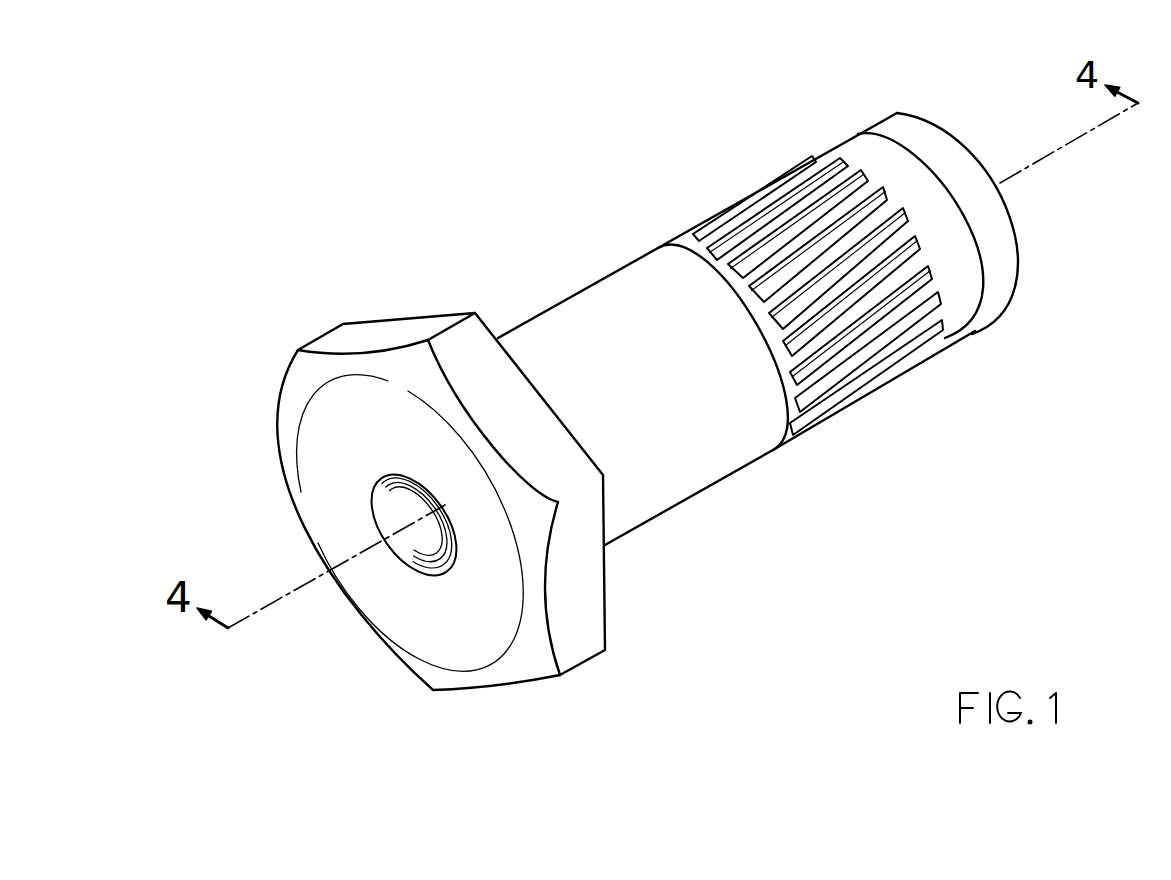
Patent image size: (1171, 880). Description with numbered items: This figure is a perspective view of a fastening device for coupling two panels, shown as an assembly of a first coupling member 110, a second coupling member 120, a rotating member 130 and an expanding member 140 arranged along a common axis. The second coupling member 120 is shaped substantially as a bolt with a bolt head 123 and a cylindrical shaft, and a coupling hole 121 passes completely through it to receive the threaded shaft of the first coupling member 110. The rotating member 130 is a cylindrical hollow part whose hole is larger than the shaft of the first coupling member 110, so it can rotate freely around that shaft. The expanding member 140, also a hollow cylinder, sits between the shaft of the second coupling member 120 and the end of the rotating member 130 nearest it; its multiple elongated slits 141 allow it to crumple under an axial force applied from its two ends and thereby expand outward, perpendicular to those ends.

The first coupling member 110 is at (1007, 268).
The second coupling member 120 is at (685, 433).
The coupling hole 121 is at (392, 517).
The bolt head 123 is at (465, 648).
The rotating member 130 is at (963, 315).
The expanding member 140 is at (816, 281).
The elongated slits 141 is at (797, 240).